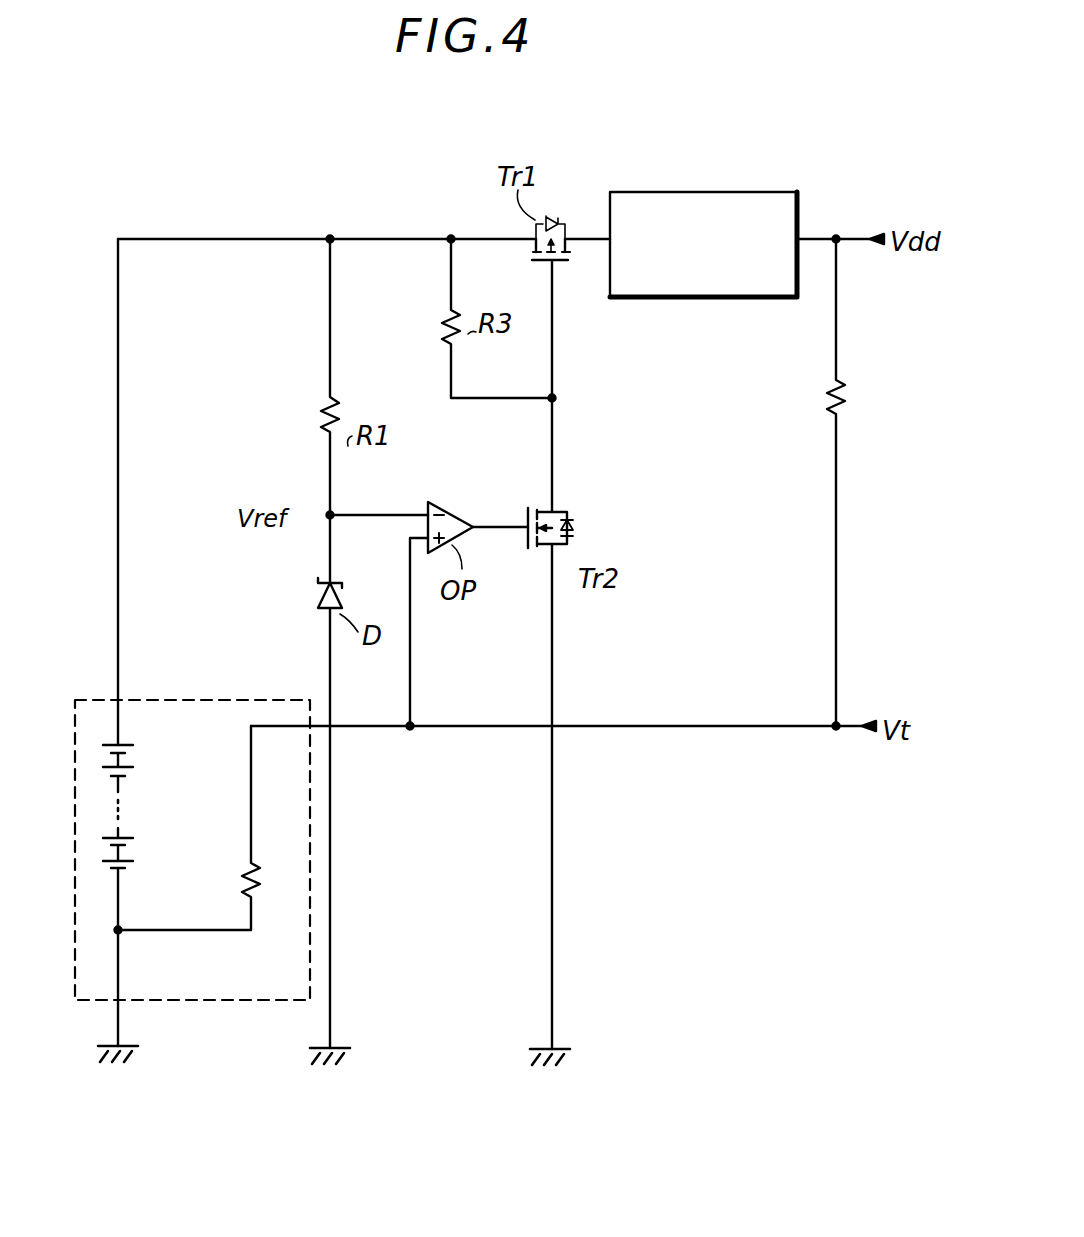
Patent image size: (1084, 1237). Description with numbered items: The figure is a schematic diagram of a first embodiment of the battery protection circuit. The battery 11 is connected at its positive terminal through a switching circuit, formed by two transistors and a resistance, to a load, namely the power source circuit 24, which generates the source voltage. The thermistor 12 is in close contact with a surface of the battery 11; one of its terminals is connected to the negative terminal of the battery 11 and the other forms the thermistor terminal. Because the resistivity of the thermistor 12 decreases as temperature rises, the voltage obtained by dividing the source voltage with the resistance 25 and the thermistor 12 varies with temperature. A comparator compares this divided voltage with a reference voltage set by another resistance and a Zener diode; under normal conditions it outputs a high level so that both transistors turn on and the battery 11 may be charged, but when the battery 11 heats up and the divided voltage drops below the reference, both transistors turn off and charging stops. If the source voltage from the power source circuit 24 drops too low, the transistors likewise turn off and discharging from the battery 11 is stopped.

The battery 11 is at (105, 738).
The thermistor 12 is at (262, 898).
The power source circuit 24 is at (658, 192).
The resistance 25 is at (846, 380).